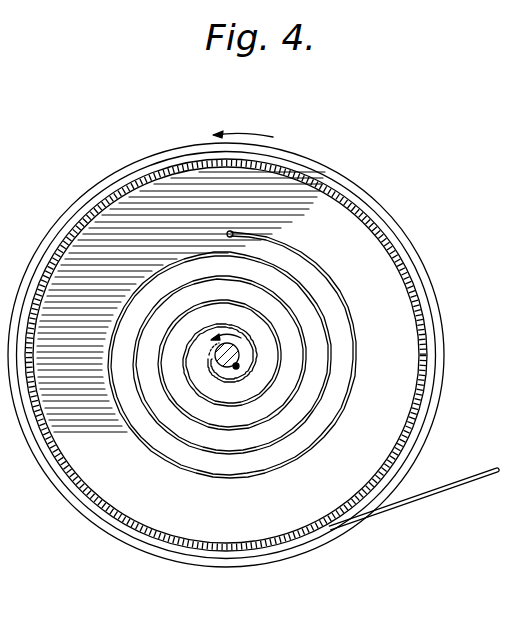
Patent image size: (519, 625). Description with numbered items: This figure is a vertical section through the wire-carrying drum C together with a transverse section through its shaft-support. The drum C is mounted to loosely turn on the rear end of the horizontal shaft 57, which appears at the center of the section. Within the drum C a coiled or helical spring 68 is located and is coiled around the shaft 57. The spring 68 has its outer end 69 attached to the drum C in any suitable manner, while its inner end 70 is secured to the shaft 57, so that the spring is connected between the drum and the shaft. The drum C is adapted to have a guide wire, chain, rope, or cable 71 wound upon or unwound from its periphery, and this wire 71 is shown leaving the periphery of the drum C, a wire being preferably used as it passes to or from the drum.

The drum C is at (423, 267).
The coiled or helical spring 68 is at (353, 353).
The outer end of the spring 69 is at (232, 232).
The horizontal shaft 57 is at (215, 357).
The inner end of the spring 70 is at (238, 366).
The guide wire, chain, rope, or cable 71 is at (445, 485).